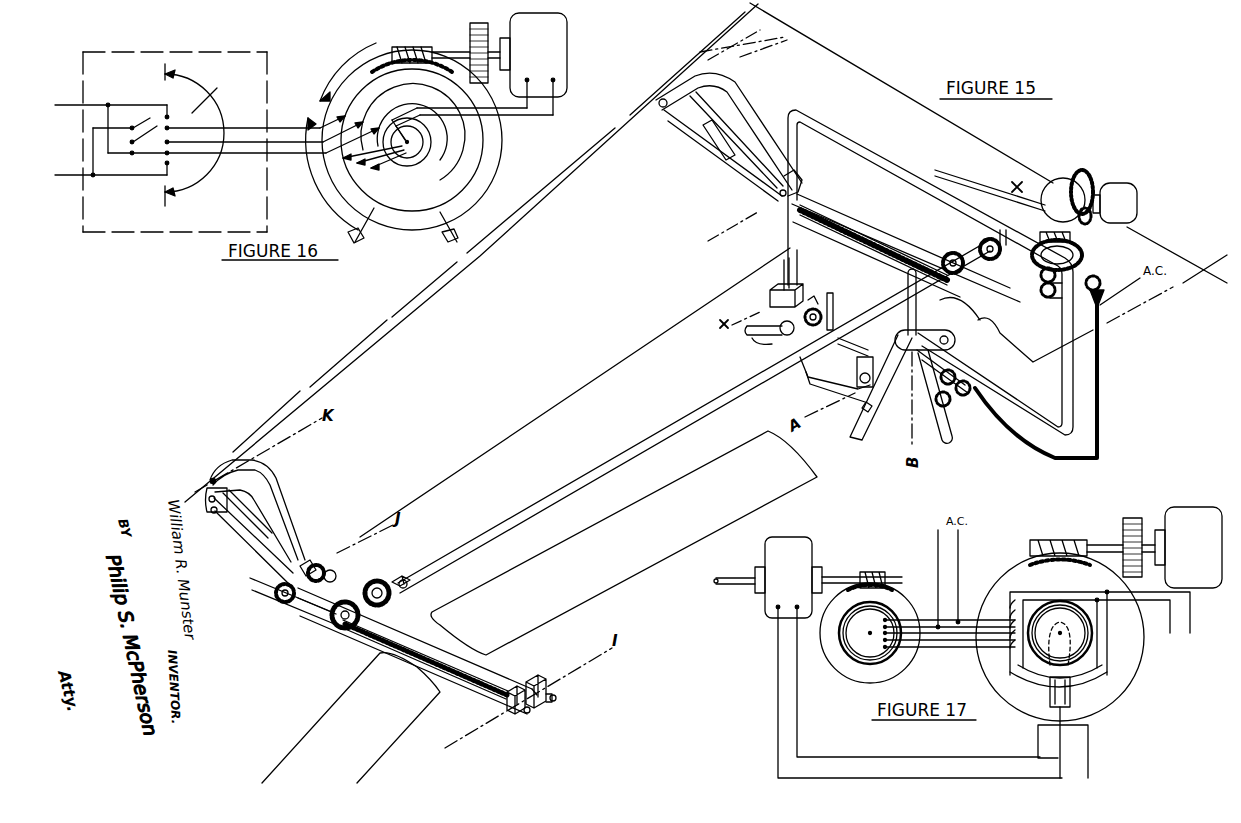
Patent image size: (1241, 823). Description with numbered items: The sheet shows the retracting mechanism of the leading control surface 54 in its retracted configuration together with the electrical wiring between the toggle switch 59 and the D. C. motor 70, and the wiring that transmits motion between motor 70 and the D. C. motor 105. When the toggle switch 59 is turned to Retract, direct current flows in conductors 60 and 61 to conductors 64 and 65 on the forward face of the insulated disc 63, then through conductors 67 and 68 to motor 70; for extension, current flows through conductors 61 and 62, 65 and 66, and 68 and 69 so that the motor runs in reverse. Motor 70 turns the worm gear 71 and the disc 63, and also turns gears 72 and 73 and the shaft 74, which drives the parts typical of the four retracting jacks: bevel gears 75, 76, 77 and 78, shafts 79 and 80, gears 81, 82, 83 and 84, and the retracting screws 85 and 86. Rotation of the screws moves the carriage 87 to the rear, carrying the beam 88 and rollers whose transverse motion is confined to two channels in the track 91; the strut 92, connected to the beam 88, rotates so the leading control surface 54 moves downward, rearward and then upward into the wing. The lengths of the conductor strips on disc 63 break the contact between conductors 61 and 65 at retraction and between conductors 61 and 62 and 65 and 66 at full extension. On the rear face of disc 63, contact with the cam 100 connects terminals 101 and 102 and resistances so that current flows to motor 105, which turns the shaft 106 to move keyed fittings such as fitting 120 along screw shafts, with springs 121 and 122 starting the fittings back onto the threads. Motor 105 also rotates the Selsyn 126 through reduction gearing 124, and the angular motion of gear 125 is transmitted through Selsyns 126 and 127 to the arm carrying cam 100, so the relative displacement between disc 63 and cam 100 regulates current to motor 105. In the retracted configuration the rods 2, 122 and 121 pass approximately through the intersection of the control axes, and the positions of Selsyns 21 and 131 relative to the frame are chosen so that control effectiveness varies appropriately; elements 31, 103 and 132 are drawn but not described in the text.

In FIG. 15, the rod 2 is at (770, 346).
In FIG. 15, the Selsyn 21 is at (781, 322).
In FIG. 15, the link 31 is at (866, 338).
In FIG. 15, the leading control surface 54 is at (372, 348).
In FIG. 16, the toggle switch 59 is at (118, 232).
In FIG. 15, the toggle switch 59 is at (768, 278).
In FIG. 16, the conductor 60 is at (238, 156).
In FIG. 16, the conductor 61 is at (238, 143).
In FIG. 16, the conductor 62 is at (238, 128).
In FIG. 16, the insulated disc 63 is at (592, 134).
In FIG. 15, the insulated disc 63 is at (1070, 244).
In FIG. 17, the insulated disc 63 is at (1208, 723).
In FIG. 16, the conductor 64 is at (380, 123).
In FIG. 16, the conductor 65 is at (372, 113).
In FIG. 16, the conductor 66 is at (366, 103).
In FIG. 16, the conductor 67 is at (423, 135).
In FIG. 16, the conductor 68 is at (458, 106).
In FIG. 16, the conductor 69 is at (498, 110).
In FIG. 16, the D. C. motor 70 is at (567, 45).
In FIG. 15, the D. C. motor 70 is at (1137, 195).
In FIG. 17, the D. C. motor 70 is at (1172, 507).
In FIG. 16, the worm gear 71 is at (422, 46).
In FIG. 15, the worm gear 71 is at (1040, 233).
In FIG. 17, the worm gear 71 is at (1060, 538).
In FIG. 16, the gear 72 is at (470, 26).
In FIG. 15, the gear 72 is at (1087, 226).
In FIG. 17, the gear 72 is at (1122, 522).
In FIG. 15, the gear 73 is at (1040, 200).
In FIG. 15, the shaft 74 is at (680, 421).
In FIG. 15, the bevel gear 75 is at (395, 598).
In FIG. 15, the bevel gear 76 is at (380, 580).
In FIG. 15, the bevel gear 77 is at (352, 631).
In FIG. 15, the bevel gear 78 is at (340, 629).
In FIG. 15, the shaft 79 is at (350, 586).
In FIG. 15, the shaft 80 is at (308, 606).
In FIG. 15, the gear 81 is at (316, 563).
In FIG. 15, the gear 82 is at (334, 571).
In FIG. 15, the gear 83 is at (278, 594).
In FIG. 15, the gear 84 is at (288, 604).
In FIG. 15, the retracting screw 85 is at (527, 714).
In FIG. 15, the retracting screw 86 is at (556, 702).
In FIG. 15, the carriage 87 is at (503, 704).
In FIG. 15, the beam 88 is at (437, 683).
In FIG. 15, the track 91 is at (406, 624).
In FIG. 15, the strut 92 is at (281, 497).
In FIG. 17, the cam 100 is at (1060, 633).
In FIG. 17, the terminal 101 is at (1058, 675).
In FIG. 17, the terminal 102 is at (1072, 705).
In FIG. 17, the brush 103 is at (1048, 705).
In FIG. 17, the D. C. motor 105 is at (765, 605).
In FIG. 17, the shaft 106 is at (740, 574).
In FIG. 15, the keyed fitting 120 is at (1046, 279).
In FIG. 15, the spring 121 is at (835, 373).
In FIG. 15, the spring 122 is at (835, 307).
In FIG. 15, the reduction gearing 124 is at (966, 400).
In FIG. 17, the reduction gearing 124 is at (872, 571).
In FIG. 17, the gear 125 is at (900, 600).
In FIG. 15, the Selsyn 126 is at (950, 418).
In FIG. 17, the Selsyn 126 is at (845, 656).
In FIG. 17, the Selsyn 127 is at (1092, 612).
In FIG. 15, the Selsyn 131 is at (835, 380).
In FIG. 15, the gear 132 is at (811, 315).